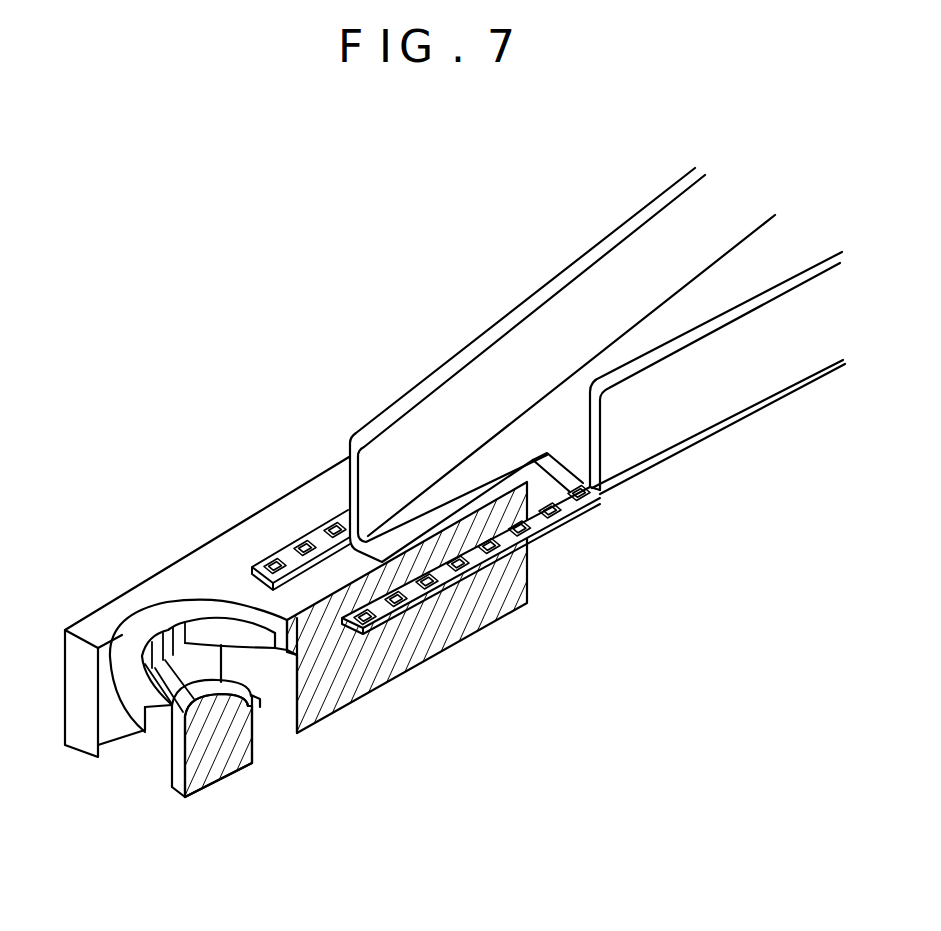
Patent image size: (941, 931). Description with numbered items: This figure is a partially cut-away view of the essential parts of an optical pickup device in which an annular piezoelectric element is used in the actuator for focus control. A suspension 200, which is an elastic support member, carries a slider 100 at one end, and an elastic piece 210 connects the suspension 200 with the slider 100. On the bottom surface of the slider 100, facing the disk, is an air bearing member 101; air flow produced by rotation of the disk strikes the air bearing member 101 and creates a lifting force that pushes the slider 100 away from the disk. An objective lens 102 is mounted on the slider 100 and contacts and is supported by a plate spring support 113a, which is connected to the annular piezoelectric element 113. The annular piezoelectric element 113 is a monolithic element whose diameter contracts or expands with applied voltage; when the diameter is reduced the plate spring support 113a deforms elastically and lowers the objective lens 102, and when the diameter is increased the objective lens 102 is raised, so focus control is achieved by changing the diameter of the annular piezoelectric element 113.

The slider 100 is at (484, 639).
The air bearing member 101 is at (103, 757).
The objective lens 102 is at (232, 760).
The annular piezoelectric element 113 is at (130, 655).
The plate spring support 113a is at (178, 660).
The suspension 200 is at (513, 298).
The elastic piece 210 is at (292, 543).